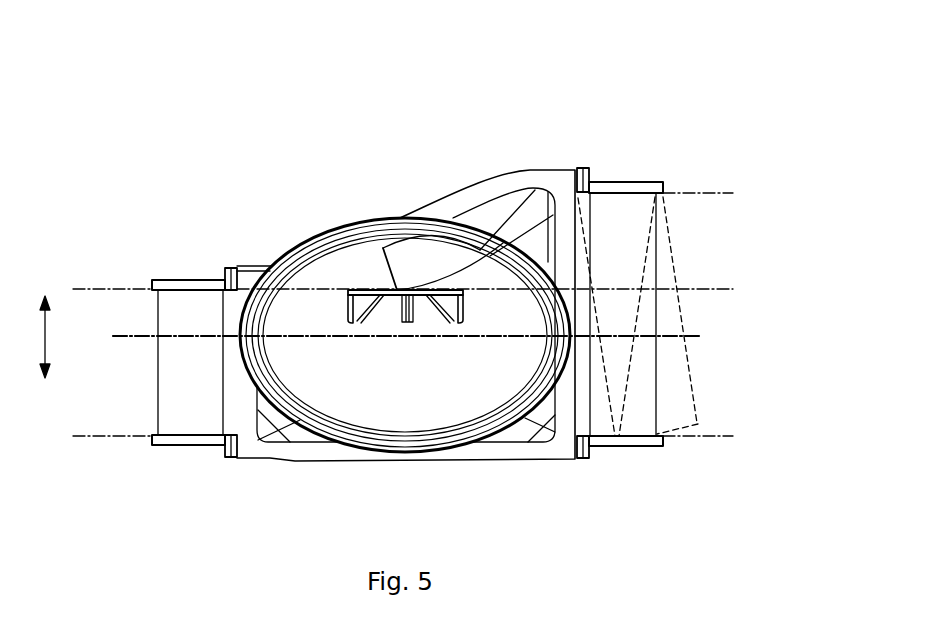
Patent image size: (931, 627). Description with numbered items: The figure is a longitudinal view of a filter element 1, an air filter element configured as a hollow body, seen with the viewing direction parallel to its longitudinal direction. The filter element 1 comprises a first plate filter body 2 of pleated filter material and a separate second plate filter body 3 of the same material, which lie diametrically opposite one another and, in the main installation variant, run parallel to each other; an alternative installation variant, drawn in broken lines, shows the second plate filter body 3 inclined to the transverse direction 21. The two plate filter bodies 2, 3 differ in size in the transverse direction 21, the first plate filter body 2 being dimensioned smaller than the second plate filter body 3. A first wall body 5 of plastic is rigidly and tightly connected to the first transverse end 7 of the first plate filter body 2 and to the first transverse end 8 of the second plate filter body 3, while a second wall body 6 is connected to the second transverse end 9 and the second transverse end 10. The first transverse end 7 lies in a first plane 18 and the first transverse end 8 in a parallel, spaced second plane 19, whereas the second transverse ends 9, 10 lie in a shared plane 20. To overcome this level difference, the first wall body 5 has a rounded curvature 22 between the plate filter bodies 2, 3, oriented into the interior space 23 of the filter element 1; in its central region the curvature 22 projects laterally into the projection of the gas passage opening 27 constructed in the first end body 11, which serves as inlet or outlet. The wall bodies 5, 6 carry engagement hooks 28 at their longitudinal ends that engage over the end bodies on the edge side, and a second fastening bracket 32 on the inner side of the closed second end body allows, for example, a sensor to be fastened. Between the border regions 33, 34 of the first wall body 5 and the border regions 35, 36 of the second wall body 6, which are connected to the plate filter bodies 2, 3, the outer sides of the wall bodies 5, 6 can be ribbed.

The filter element 1 is at (758, 114).
The first plate filter body 2 is at (152, 368).
The second plate filter body 3 is at (696, 352).
The first wall body 5 is at (171, 274).
The second wall body 6 is at (170, 452).
The first transverse end of the first plate filter body 7 is at (175, 291).
The first transverse end of the second plate filter body 8 is at (630, 195).
The second transverse end of the first plate filter body 9 is at (170, 433).
The second transverse end of the second plate filter body 10 is at (598, 432).
The first end body 11 is at (403, 210).
The first plane 18 is at (80, 285).
The second plane 19 is at (727, 190).
The shared plane 20 is at (80, 440).
The transverse direction 21 is at (45, 333).
The curvature 22 is at (502, 238).
The interior space 23 is at (378, 397).
The gas passage opening 27 is at (317, 410).
The engagement hook 28 is at (230, 268).
The second fastening bracket 32 is at (440, 313).
The border region of the first wall body 33 is at (193, 280).
The border region of the first wall body 34 is at (621, 182).
The border region of the second wall body 35 is at (200, 447).
The border region of the second wall body 36 is at (625, 447).